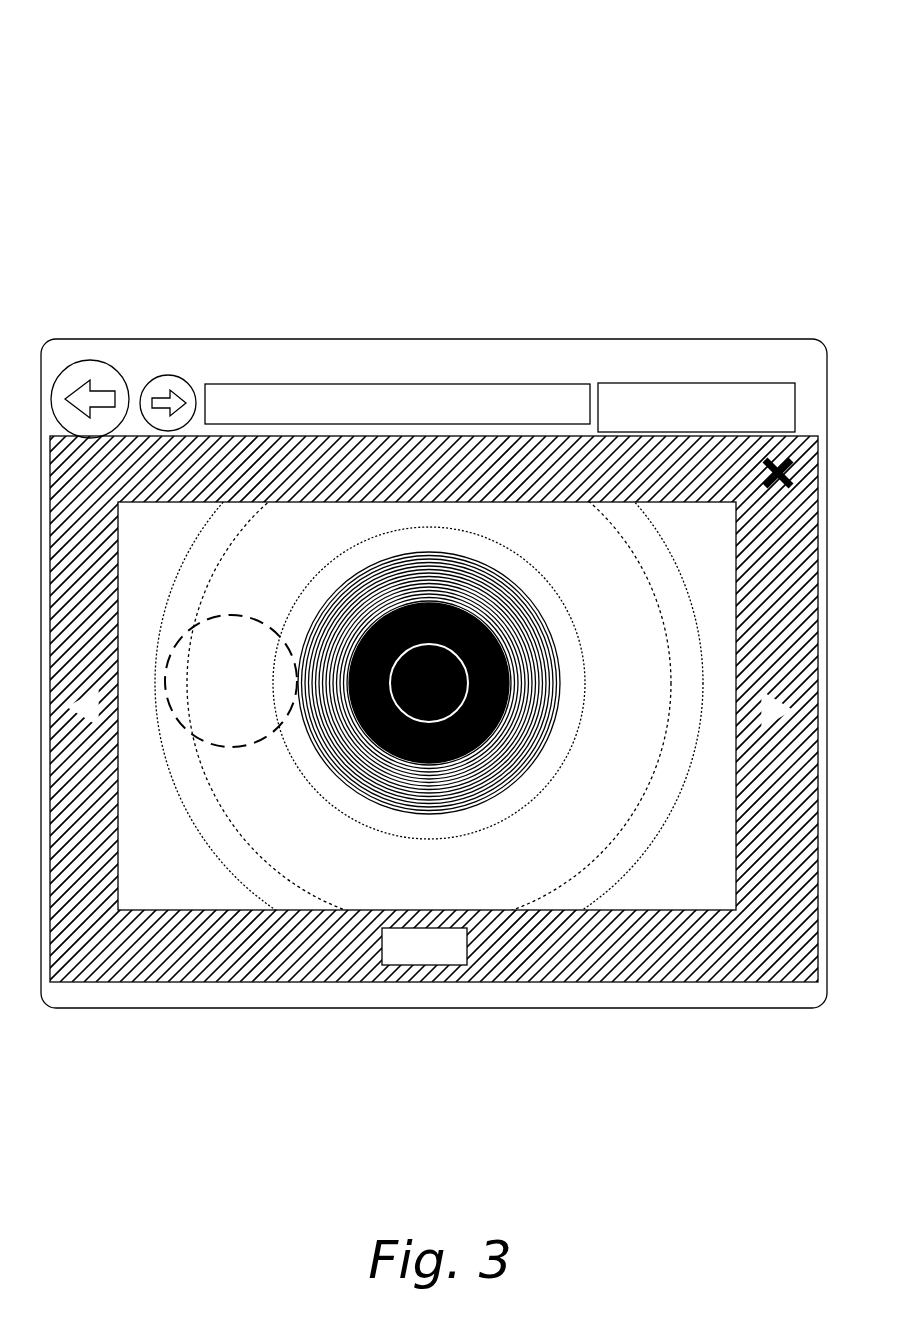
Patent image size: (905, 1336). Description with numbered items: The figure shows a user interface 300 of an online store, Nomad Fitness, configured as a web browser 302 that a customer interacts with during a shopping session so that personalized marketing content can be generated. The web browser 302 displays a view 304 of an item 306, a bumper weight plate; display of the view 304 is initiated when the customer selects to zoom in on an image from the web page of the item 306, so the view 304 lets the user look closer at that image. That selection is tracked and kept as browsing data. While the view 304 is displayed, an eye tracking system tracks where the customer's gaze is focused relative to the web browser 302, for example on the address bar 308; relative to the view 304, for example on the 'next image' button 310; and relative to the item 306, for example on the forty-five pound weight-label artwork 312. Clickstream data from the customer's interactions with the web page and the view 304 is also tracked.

The user interface 300 is at (136, 76).
The web browser 302 is at (156, 356).
The view 304 is at (230, 960).
The item 306 is at (230, 583).
The address bar 308 is at (323, 390).
The 'next image' button 310 is at (772, 710).
The '45 LB' artwork 312 is at (230, 635).